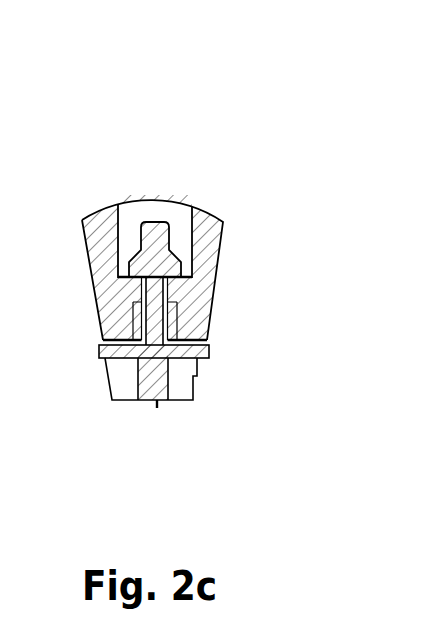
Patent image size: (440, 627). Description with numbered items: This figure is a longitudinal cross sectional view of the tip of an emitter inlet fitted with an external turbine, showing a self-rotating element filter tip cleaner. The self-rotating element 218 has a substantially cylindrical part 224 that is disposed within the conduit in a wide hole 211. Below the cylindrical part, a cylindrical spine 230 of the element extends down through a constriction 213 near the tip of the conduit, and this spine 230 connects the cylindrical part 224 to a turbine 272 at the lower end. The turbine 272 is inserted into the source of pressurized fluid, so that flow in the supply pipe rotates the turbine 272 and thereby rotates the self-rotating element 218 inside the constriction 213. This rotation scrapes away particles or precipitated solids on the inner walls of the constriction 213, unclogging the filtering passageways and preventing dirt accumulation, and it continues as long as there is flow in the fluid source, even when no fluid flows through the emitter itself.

The wide hole 211 is at (175, 217).
The self-rotating element 218 is at (178, 230).
The substantially cylindrical part 224 is at (158, 238).
The cylindrical spine 230 is at (148, 315).
The constriction 213 is at (145, 300).
The turbine 272 is at (157, 405).